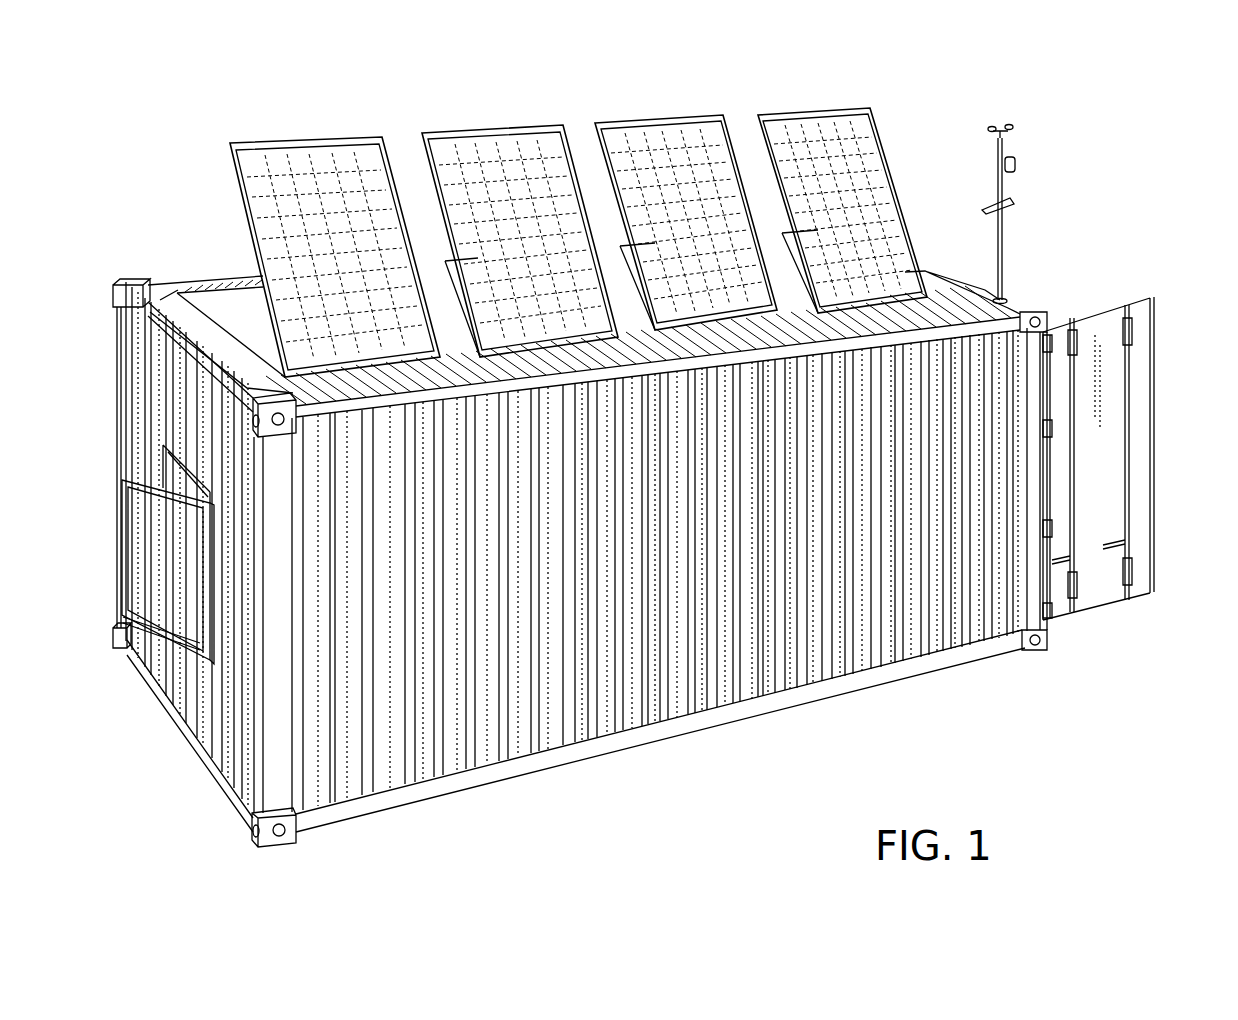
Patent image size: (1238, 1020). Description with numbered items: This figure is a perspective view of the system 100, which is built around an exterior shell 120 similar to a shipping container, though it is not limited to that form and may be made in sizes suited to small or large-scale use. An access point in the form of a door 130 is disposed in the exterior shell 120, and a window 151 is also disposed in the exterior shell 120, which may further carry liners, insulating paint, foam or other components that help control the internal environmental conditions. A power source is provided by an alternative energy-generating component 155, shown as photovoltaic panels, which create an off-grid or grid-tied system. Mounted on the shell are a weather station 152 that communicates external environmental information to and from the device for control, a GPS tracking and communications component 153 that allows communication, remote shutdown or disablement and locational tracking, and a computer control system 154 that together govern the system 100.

The system 100 is at (981, 711).
The exterior shell 120 is at (185, 297).
The door 130 is at (1097, 348).
The window 151 is at (152, 520).
The weather station 152 is at (1007, 197).
The GPS tracking and communications component 153 is at (998, 185).
The computer control system 154 is at (1000, 132).
The alternative energy-generating component 155 is at (858, 165).